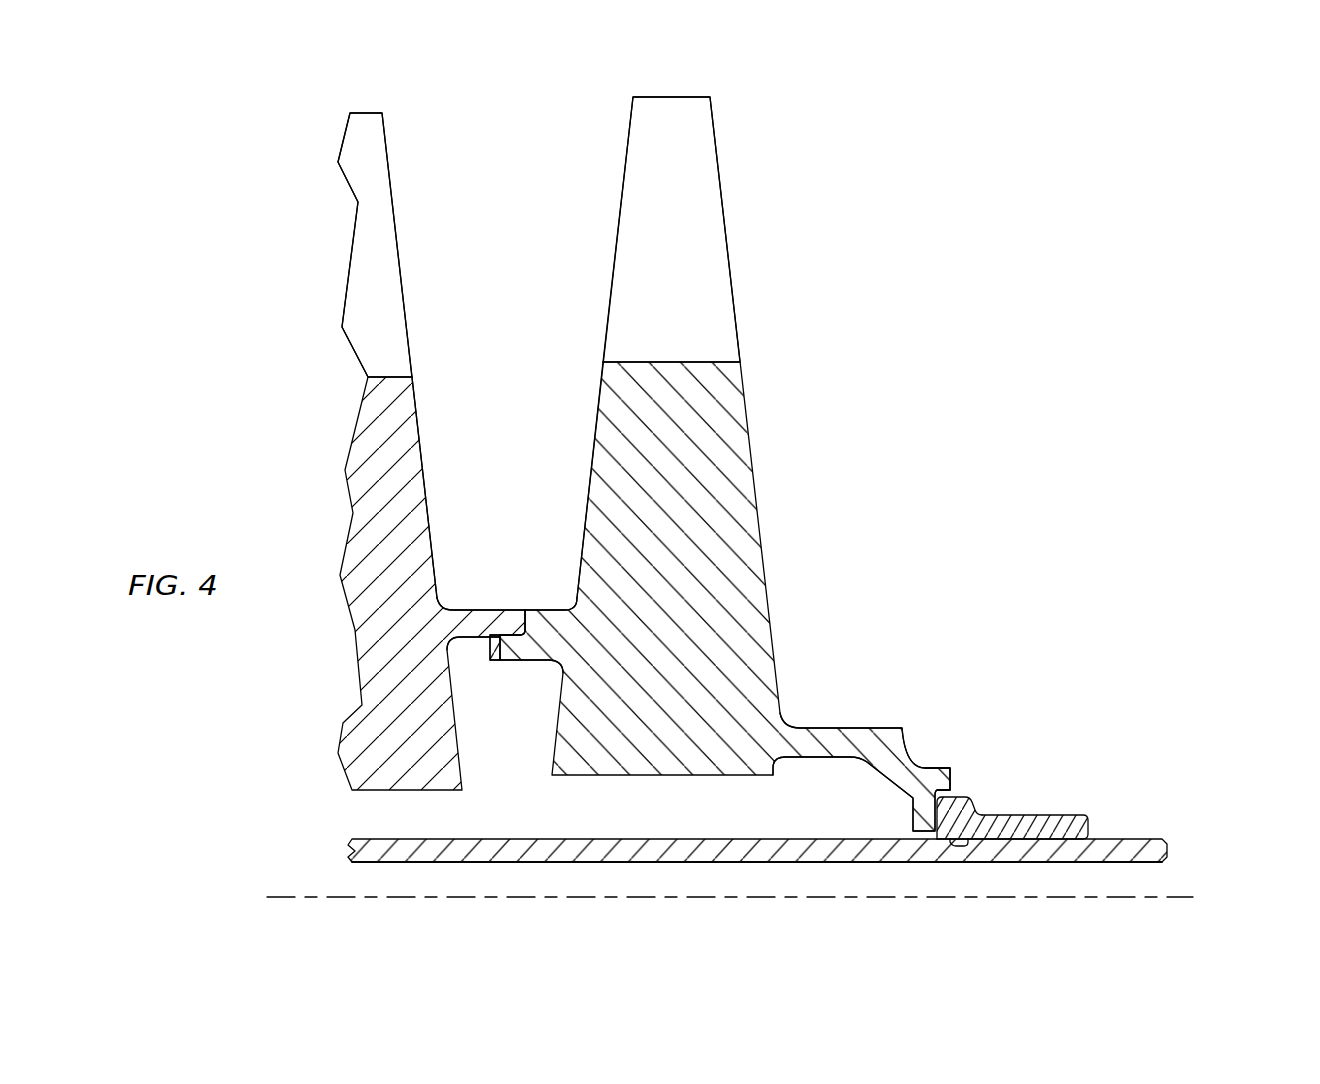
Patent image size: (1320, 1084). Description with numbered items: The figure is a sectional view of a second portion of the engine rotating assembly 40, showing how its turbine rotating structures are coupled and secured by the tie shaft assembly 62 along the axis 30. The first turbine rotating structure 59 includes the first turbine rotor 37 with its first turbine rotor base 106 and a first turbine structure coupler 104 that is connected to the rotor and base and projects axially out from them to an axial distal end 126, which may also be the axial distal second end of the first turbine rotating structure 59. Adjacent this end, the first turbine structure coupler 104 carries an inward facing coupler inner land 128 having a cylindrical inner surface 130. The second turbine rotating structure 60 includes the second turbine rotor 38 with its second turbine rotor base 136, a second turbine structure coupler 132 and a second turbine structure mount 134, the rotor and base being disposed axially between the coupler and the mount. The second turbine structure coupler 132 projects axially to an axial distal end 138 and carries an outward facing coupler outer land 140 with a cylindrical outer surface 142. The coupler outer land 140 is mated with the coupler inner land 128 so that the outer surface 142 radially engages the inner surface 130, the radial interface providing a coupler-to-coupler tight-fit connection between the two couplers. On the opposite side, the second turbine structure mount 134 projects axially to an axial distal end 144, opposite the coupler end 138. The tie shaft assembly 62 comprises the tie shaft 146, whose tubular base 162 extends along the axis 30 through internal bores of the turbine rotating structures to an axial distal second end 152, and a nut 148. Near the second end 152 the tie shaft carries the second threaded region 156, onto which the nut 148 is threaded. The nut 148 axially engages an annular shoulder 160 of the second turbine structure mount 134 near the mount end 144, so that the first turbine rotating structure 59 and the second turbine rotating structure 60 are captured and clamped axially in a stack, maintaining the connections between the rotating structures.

The axis 30 is at (282, 896).
The first turbine rotor 37 is at (424, 411).
The second turbine rotor 38 is at (591, 441).
The rotating assembly 40 is at (1034, 143).
The first turbine rotating structure 59 is at (364, 101).
The second turbine rotating structure 60 is at (669, 90).
The tie shaft assembly 62 is at (470, 866).
The first turbine structure coupler 104 is at (472, 607).
The first turbine rotor base 106 is at (408, 560).
The axial distal end of the first turbine structure coupler 126 is at (530, 620).
The coupler inner land 128 is at (499, 662).
The cylindrical inner surface 130 is at (495, 647).
The second turbine structure coupler 132 is at (531, 665).
The second turbine structure mount 134 is at (866, 714).
The second turbine rotor base 136 is at (686, 560).
The axial distal end of the second turbine structure coupler 138 is at (480, 640).
The coupler outer land 140 is at (505, 634).
The cylindrical outer surface 142 is at (512, 622).
The axial distal end of the second turbine structure mount 144 is at (952, 776).
The tie shaft 146 is at (697, 865).
The nut 148 is at (1050, 815).
The axial distal second end of the tie shaft 152 is at (1170, 847).
The tie shaft second threaded region 156 is at (1010, 815).
The annular shoulder 160 is at (950, 840).
The tubular base 162 is at (535, 857).